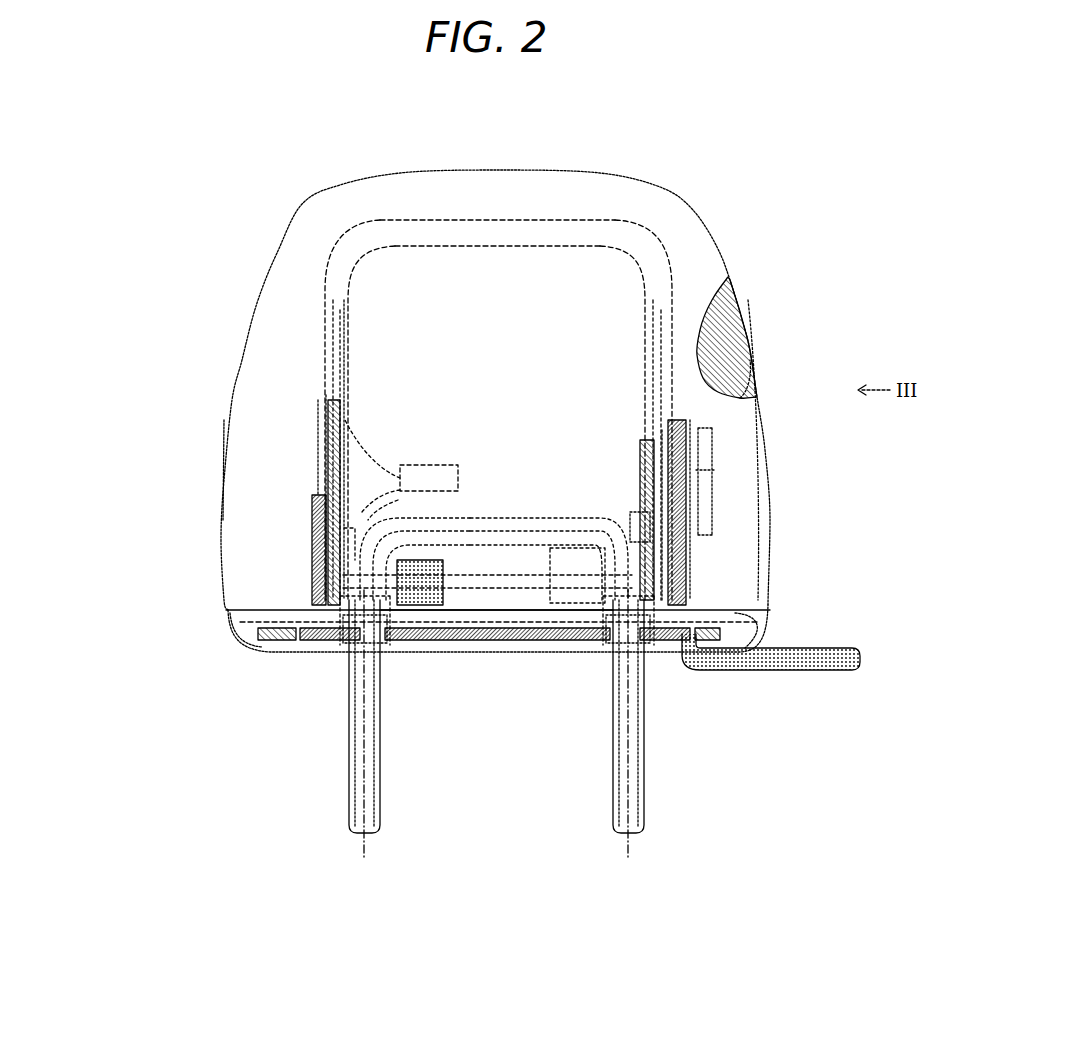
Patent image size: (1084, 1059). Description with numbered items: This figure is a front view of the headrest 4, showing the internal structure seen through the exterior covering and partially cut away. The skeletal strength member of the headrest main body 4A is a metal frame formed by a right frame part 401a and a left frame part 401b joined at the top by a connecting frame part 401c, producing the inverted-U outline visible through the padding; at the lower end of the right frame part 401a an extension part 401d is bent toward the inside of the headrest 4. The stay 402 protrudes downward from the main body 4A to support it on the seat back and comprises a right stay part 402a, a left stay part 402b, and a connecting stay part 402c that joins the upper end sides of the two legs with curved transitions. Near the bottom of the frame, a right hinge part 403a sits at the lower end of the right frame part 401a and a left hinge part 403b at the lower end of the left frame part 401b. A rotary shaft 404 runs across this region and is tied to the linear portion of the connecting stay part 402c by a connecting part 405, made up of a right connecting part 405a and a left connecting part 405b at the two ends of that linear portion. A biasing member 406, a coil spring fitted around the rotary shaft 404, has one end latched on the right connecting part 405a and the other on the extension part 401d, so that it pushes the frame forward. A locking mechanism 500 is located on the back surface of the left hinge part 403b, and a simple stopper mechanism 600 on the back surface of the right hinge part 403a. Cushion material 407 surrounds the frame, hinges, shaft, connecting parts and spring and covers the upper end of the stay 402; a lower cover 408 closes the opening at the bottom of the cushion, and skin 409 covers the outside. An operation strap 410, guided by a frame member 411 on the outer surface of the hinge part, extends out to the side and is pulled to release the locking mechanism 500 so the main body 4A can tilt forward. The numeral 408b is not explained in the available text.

The headrest 4 is at (718, 190).
The headrest main body 4A is at (232, 420).
The right frame part 401a is at (325, 282).
The left frame part 401b is at (675, 290).
The connecting frame part 401c is at (517, 222).
The extension part 401d is at (442, 465).
The stay 402 is at (496, 702).
The right stay part 402a is at (380, 714).
The left stay part 402b is at (613, 724).
The connecting stay part 402c is at (497, 545).
The right hinge part 403a is at (318, 553).
The left hinge part 403b is at (690, 555).
The rotary shaft 404 is at (525, 602).
The connecting part 405 is at (487, 499).
The right connecting part 405a is at (442, 568).
The left connecting part 405b is at (555, 560).
The biasing member 406 is at (400, 500).
The cushion material 407 is at (720, 330).
The lower cover 408 is at (296, 650).
The holder support portion 408b is at (352, 640).
The skin 409 is at (745, 368).
The operation strap 410 is at (795, 670).
The frame member 411 is at (712, 450).
The locking mechanism 500 is at (628, 522).
The stopper mechanism 600 is at (344, 530).